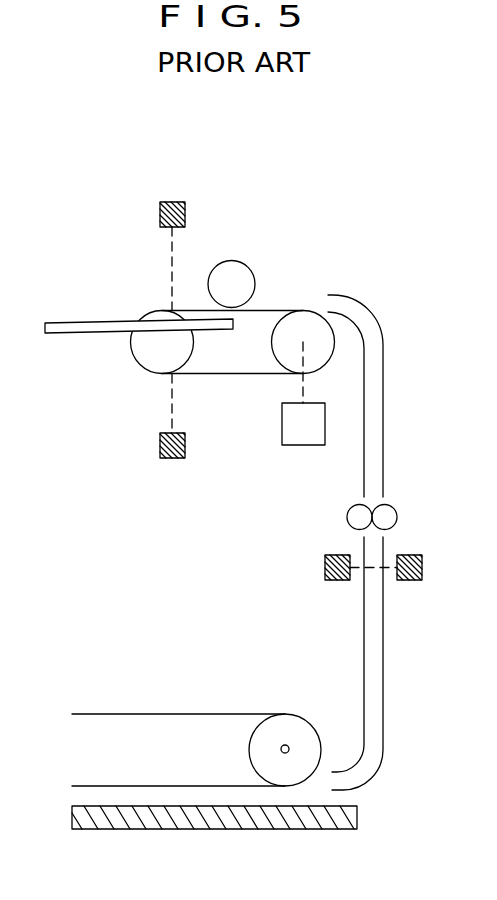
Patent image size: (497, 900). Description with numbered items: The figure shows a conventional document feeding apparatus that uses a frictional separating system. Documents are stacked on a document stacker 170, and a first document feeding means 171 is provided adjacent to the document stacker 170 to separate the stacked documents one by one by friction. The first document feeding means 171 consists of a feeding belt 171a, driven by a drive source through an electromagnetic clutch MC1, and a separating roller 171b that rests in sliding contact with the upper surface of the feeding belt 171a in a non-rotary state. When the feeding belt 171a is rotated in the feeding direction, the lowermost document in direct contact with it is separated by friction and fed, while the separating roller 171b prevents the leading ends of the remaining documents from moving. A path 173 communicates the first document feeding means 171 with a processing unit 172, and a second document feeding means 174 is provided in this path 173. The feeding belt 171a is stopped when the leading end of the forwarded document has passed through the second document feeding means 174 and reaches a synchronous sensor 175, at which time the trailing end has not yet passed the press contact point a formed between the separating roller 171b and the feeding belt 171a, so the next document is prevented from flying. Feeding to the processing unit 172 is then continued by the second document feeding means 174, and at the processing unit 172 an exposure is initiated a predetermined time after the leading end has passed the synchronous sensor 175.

The document stacker 170 is at (83, 321).
The first document feeding means 171 is at (233, 330).
The feeding belt 171a is at (282, 309).
The separating roller 171b is at (231, 260).
The press contact point a is at (208, 308).
The processing unit 172 is at (163, 797).
The path 173 is at (384, 415).
The second document feeding means 174 is at (401, 517).
The synchronous sensor 175 is at (409, 580).
The electromagnetic clutch MC1 is at (303, 445).